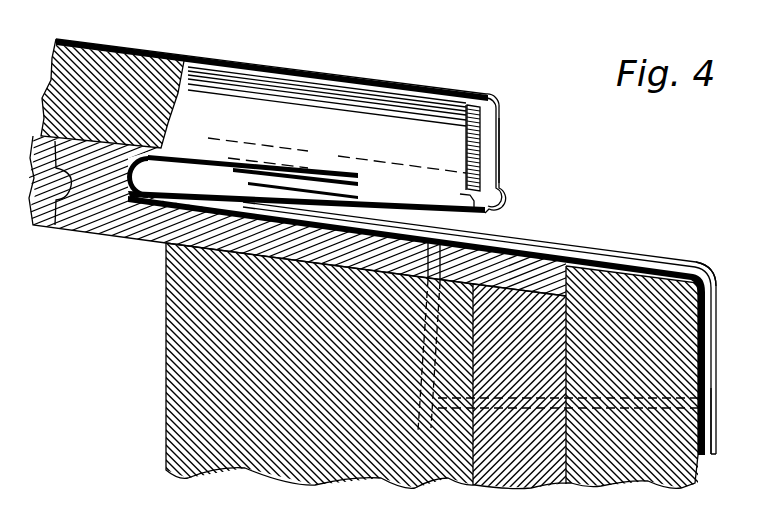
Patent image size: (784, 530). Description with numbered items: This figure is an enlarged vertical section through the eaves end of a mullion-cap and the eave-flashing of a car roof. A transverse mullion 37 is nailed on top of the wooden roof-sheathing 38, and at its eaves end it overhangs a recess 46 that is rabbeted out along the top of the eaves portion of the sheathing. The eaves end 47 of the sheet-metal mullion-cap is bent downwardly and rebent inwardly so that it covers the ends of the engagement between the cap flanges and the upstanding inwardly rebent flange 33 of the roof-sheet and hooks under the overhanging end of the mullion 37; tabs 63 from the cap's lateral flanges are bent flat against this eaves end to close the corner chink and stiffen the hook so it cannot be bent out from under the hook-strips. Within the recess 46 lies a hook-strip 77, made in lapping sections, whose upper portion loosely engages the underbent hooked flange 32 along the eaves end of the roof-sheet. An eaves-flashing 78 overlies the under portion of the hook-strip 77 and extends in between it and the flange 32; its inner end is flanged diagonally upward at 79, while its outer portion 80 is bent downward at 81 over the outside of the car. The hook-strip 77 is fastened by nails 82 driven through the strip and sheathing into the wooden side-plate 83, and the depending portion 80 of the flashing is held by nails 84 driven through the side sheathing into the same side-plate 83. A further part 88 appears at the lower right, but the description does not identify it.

The underbent hooked flange 32 is at (478, 193).
The upstanding inwardly rebent flange 33 is at (305, 112).
The transverse mullion 37 is at (90, 66).
The wooden roof-sheathing 38 is at (84, 197).
The recess 46 is at (104, 152).
The eaves end of mullion-cap 47 is at (488, 134).
The tab 63 is at (491, 157).
The hook-strip 77 is at (128, 194).
The eaves-flashing 78 is at (592, 241).
The diagonally upward flange 79 is at (148, 143).
The outer portion of eaves-flashing 80 is at (711, 320).
The downward bend 81 is at (697, 251).
The nail 82 is at (403, 385).
The wooden side-plate 83 is at (184, 354).
The nail 84 is at (700, 392).
The end block 88 is at (621, 449).